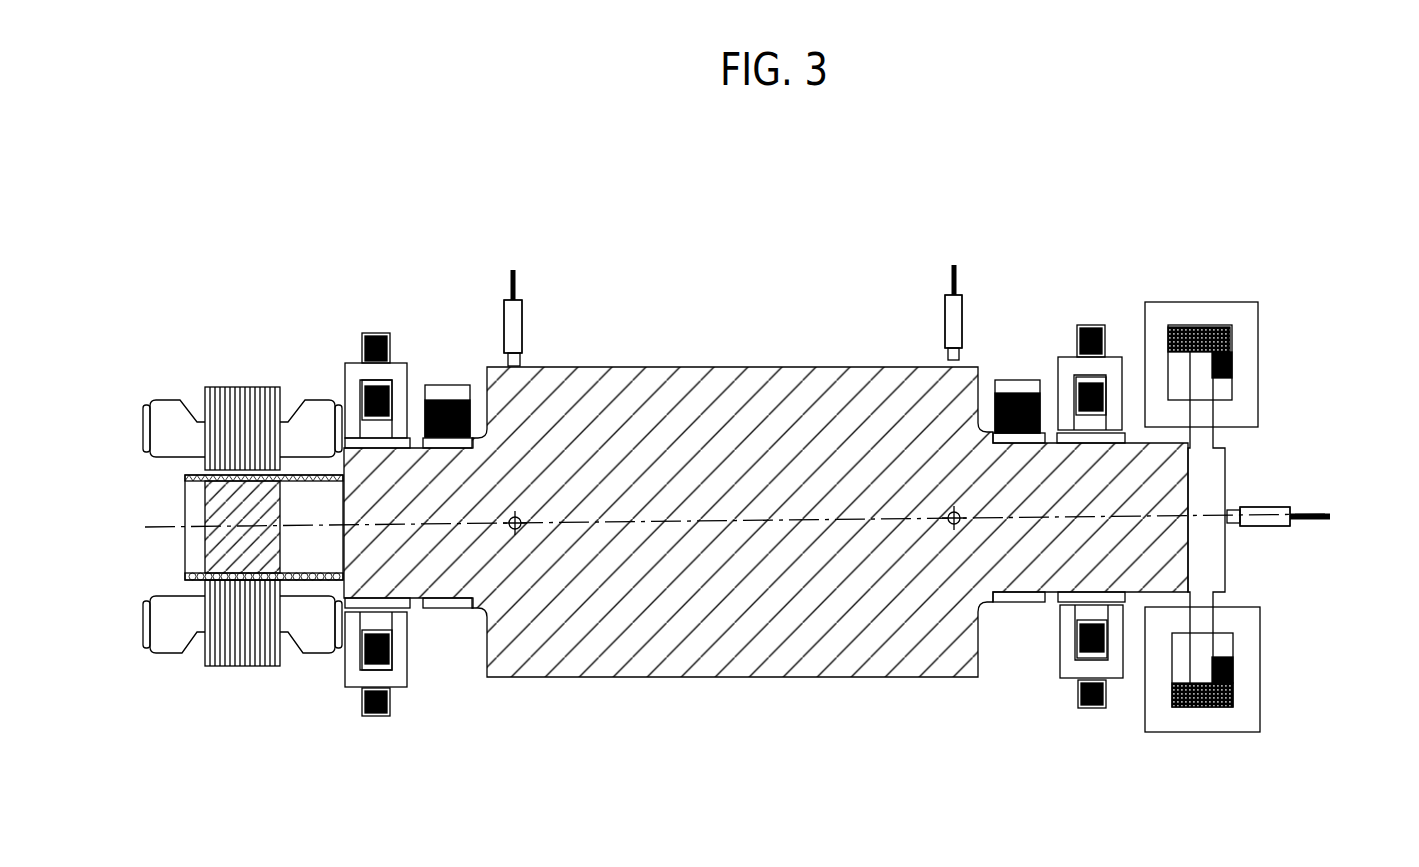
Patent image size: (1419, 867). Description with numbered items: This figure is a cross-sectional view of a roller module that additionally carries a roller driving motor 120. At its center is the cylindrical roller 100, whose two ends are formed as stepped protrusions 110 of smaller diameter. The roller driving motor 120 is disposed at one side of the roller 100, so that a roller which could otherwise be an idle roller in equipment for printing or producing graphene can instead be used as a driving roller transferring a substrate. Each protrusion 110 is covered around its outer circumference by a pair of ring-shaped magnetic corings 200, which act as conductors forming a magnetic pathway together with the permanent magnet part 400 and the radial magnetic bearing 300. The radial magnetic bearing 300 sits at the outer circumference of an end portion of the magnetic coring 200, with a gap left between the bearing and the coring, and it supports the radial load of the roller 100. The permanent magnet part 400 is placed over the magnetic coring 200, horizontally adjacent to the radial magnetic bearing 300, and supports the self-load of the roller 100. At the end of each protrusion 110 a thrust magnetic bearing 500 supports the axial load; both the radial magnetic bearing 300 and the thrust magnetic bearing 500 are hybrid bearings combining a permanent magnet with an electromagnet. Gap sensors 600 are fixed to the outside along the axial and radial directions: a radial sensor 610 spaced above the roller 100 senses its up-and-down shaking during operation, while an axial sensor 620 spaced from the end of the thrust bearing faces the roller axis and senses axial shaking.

The roller 100 is at (751, 360).
The protrusion 110 is at (455, 632).
The roller driving motor 120 is at (236, 676).
The magnetic coring 200 is at (341, 606).
The radial magnetic bearing 300 is at (343, 356).
The permanent magnet part 400 is at (447, 380).
The thrust magnetic bearing 500 is at (1242, 300).
The gap sensor 600 is at (522, 298).
The radial sensor 610 is at (733, 324).
The axial sensor 620 is at (1265, 516).